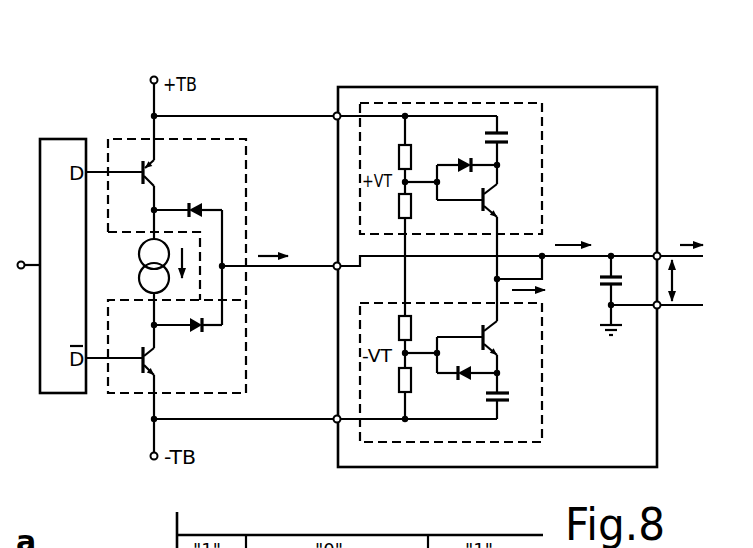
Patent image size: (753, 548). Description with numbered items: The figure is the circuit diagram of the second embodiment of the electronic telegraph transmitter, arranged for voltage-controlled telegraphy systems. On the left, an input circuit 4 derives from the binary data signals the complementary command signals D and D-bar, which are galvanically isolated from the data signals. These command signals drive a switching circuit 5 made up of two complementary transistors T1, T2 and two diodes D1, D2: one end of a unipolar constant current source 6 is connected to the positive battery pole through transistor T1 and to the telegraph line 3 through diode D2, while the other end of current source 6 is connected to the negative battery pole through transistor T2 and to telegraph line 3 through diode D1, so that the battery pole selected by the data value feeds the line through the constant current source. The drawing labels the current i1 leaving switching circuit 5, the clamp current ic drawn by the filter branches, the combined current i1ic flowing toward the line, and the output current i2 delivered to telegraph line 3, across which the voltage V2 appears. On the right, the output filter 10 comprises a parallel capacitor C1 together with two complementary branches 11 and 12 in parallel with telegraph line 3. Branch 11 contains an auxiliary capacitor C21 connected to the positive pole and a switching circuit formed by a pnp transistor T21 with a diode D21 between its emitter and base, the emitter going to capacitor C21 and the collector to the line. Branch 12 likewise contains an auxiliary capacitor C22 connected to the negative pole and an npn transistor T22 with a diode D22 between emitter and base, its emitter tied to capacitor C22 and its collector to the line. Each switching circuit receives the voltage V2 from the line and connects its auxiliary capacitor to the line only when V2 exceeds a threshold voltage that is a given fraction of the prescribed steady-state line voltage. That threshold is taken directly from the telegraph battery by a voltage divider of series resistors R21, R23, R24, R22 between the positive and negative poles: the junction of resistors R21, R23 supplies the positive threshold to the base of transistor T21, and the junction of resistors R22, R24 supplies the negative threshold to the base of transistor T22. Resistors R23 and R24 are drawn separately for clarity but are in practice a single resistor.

The telegraph line 3 is at (722, 290).
The input circuit 4 is at (63, 139).
The switching circuit 5 is at (247, 211).
The unipolar constant current source 6 is at (139, 254).
The output filter 10 is at (658, 151).
The branch 11 is at (544, 150).
The branch 12 is at (543, 370).
The transistor T1 is at (150, 169).
The transistor T2 is at (149, 359).
The diode D1 is at (201, 331).
The diode D2 is at (196, 202).
The resistor R21 is at (398, 151).
The resistor R22 is at (398, 385).
The resistor R23 is at (398, 206).
The resistor R24 is at (398, 336).
The diode D21 is at (463, 158).
The diode D22 is at (466, 378).
The pnp transistor T21 is at (481, 198).
The npn transistor T22 is at (483, 330).
The auxiliary capacitor C21 is at (506, 143).
The auxiliary capacitor C22 is at (505, 393).
The parallel capacitor C1 is at (605, 283).
The input current i1 is at (282, 255).
The clamp current ic is at (538, 294).
The sum current i1+ic i1ic is at (580, 231).
The output current i2 is at (691, 231).
The voltage V2 is at (686, 280).